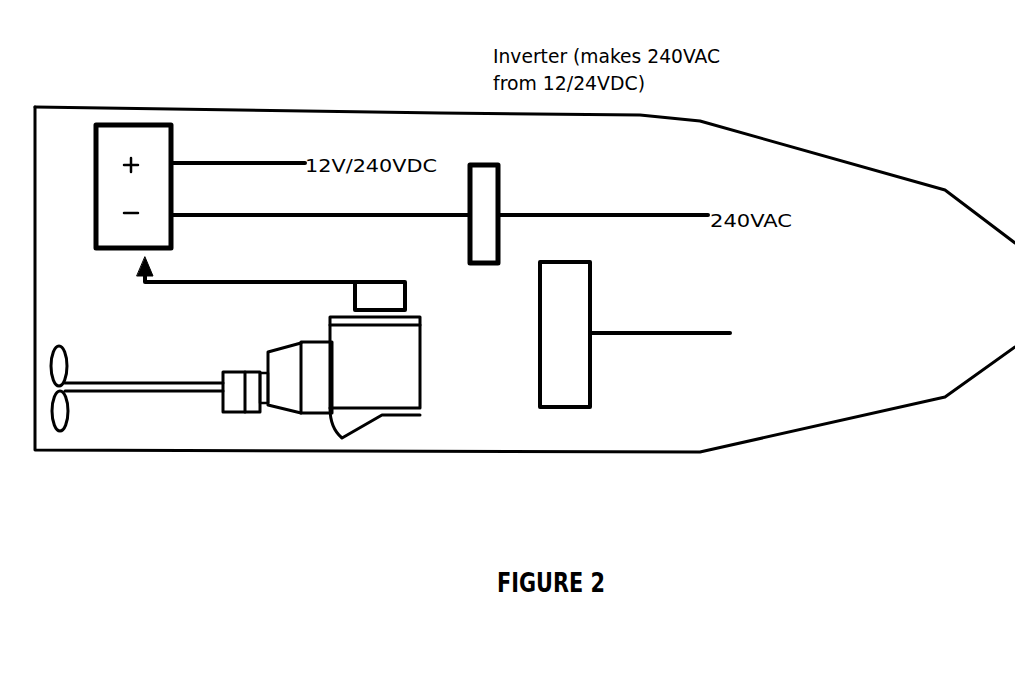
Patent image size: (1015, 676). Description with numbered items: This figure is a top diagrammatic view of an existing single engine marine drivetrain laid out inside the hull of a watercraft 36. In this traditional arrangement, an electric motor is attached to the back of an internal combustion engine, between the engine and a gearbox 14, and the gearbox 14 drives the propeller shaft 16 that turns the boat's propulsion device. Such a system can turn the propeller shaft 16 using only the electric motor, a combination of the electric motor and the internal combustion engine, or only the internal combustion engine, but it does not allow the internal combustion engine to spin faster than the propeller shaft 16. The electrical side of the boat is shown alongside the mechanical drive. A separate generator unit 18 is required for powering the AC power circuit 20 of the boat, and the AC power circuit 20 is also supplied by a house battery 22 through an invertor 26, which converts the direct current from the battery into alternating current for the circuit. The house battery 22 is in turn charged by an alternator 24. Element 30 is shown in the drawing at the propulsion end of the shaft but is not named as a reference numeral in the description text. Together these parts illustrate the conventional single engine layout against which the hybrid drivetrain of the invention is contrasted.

The gearbox 14 is at (284, 366).
The propeller shaft 16 is at (139, 383).
The generator unit 18 is at (565, 325).
The AC power circuit 20 is at (683, 333).
The house battery 22 is at (104, 135).
The alternator 24 is at (383, 282).
The invertor 26 is at (500, 207).
The propeller 30 is at (62, 345).
The watercraft 36 is at (863, 415).